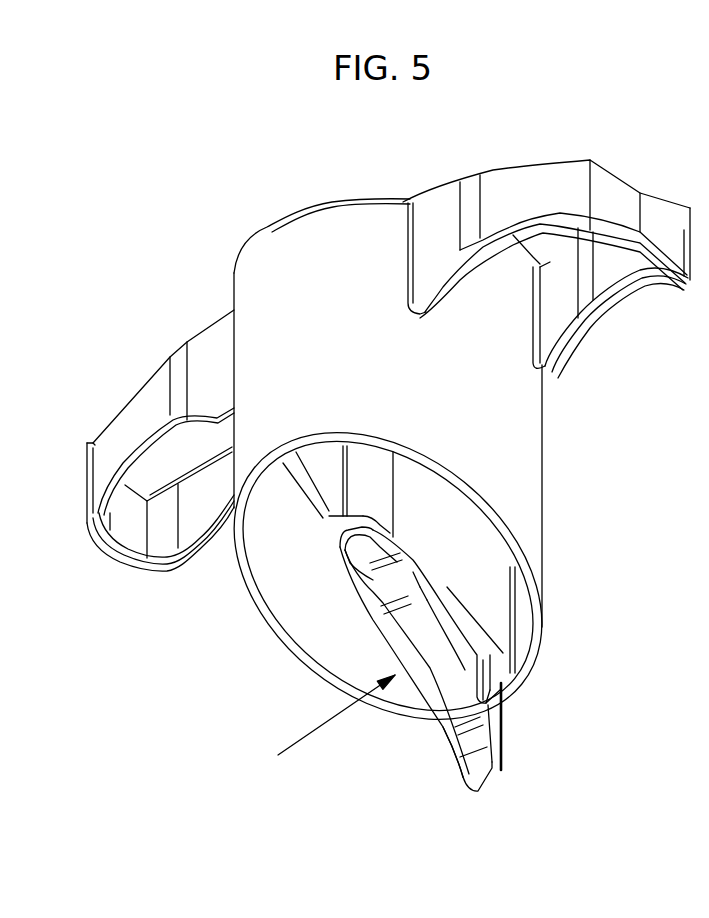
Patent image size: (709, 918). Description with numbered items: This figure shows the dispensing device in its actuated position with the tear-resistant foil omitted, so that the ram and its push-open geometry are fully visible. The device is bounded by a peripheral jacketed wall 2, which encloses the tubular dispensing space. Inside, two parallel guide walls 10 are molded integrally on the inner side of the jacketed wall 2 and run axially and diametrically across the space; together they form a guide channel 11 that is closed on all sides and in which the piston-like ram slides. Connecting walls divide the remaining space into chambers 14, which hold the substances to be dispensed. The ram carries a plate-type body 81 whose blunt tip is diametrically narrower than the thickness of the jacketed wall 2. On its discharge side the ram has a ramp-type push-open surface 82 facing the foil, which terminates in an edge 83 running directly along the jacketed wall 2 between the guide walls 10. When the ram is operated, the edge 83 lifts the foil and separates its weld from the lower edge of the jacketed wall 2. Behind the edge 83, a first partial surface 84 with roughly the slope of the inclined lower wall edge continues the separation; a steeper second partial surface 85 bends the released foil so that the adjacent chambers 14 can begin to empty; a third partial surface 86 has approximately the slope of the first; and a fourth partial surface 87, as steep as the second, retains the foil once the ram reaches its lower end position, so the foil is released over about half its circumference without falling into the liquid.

The peripheral jacketed wall 2 is at (507, 407).
The guide walls 10 is at (452, 546).
The guide channel 11 is at (363, 548).
The chambers 14 is at (292, 623).
The plate-type body 81 is at (447, 613).
The ramp-type push-open surface 82 is at (321, 737).
The edge 83 is at (500, 770).
The first partial surface 84 is at (472, 770).
The second partial surface 85 is at (452, 745).
The third partial surface 86 is at (423, 658).
The fourth partial surface 87 is at (397, 583).